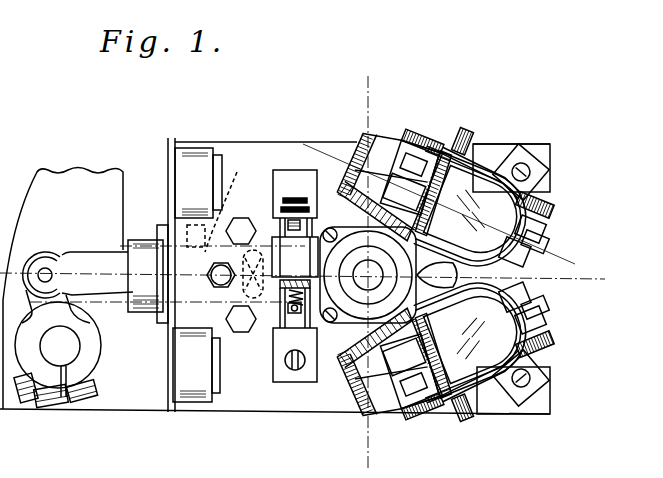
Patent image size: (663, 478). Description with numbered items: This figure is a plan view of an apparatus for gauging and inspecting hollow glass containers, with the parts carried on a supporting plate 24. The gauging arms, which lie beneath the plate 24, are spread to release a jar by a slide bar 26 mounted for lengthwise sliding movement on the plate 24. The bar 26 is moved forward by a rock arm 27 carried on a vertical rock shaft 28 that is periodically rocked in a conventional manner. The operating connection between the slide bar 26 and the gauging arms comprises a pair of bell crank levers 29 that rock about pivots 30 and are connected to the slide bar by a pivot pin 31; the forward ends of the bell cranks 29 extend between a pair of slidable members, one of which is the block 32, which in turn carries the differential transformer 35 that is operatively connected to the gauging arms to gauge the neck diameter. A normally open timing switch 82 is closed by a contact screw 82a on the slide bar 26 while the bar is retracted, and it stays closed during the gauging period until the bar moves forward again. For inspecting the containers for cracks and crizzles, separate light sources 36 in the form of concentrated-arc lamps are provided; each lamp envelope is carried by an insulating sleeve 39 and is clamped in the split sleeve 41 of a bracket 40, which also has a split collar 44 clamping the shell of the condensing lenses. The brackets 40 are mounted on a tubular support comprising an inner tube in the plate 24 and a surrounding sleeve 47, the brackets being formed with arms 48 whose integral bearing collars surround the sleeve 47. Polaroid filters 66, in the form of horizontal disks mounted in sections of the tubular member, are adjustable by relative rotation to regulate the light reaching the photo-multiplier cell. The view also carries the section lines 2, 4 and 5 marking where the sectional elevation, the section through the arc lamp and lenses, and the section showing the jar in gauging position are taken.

The supporting plate 24 is at (257, 402).
The slide bar 26 is at (100, 253).
The rock arm 27 is at (93, 317).
The rock shaft 28 is at (73, 348).
The bell crank levers 29 is at (292, 236).
The pivots 30 is at (245, 217).
The pivot pin 31 is at (210, 280).
The slidable member 32 is at (307, 368).
The differential transformer 35 is at (295, 262).
The light sources 36 is at (296, 155).
The insulating sleeve 39 is at (382, 148).
The bracket 40 is at (426, 146).
The split sleeve 41 is at (403, 382).
The split collar 44 is at (543, 232).
The sleeve 47 is at (360, 322).
The arms 48 is at (441, 259).
The polaroid filters 66 is at (381, 274).
The timing switch 82 is at (202, 205).
The contact screw 82a is at (223, 202).
The section line 2- 2 is at (575, 264).
The section line 4- 4 is at (343, 147).
The section line 5- 5 is at (350, 94).